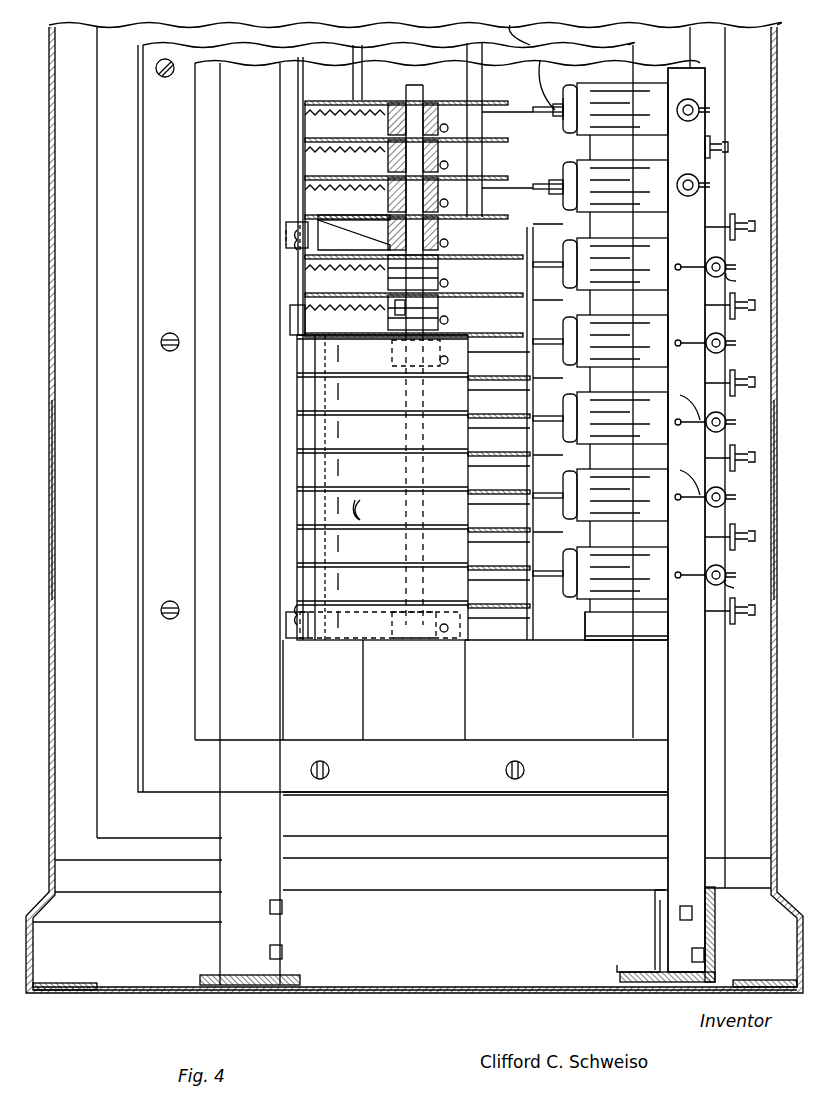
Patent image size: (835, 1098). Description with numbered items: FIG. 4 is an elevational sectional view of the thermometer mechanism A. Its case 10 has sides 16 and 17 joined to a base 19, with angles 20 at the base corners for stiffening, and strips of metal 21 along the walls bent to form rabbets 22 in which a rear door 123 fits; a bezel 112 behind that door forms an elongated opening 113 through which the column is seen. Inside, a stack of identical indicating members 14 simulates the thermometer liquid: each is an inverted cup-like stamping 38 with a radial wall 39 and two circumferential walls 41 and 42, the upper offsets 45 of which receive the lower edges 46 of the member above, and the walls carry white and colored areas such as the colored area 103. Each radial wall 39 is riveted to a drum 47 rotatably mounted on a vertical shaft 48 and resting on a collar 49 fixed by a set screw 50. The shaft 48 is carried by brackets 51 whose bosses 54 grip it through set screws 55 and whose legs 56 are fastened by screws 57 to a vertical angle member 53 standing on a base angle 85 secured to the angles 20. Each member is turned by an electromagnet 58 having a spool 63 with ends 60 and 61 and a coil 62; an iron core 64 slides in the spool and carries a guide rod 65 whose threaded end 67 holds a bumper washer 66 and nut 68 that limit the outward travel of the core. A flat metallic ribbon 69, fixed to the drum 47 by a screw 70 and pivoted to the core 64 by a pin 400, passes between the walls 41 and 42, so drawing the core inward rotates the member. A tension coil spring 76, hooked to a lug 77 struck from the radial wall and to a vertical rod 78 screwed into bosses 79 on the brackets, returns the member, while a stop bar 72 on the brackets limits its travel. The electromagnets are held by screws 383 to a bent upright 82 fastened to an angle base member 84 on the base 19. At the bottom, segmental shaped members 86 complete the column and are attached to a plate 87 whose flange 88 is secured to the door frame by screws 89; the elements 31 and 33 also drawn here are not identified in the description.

The case 10 is at (53, 355).
The indicating member 14 is at (297, 500).
The side 16 is at (94, 600).
The side 17 is at (772, 700).
The base 19 is at (139, 998).
The angle 20 is at (60, 985).
The strip of metal 21 is at (70, 438).
The rabbet 22 is at (110, 227).
The panel 31 is at (158, 445).
The screw 33 is at (170, 333).
The inverted cup-like stamping 38 is at (330, 102).
The radial wall 39 is at (363, 102).
The circumferential wall 41 is at (520, 417).
The circumferential wall 42 is at (297, 395).
The offset 45 is at (520, 530).
The lower edge 46 is at (370, 460).
The drum 47 is at (445, 103).
The shaft 48 is at (414, 85).
The collar 49 is at (388, 125).
The set screw 50 is at (450, 128).
The bracket 51 is at (330, 240).
The angle member 53 is at (282, 702).
The boss 54 is at (440, 240).
The set screw 55 is at (450, 243).
The leg 56 is at (286, 233).
The bolt or screw 57 is at (293, 233).
The electromagnet 58 is at (580, 85).
The spool end 60 is at (565, 84).
The spool end 61 is at (665, 95).
The coil 62 is at (612, 98).
The spool 63 is at (558, 102).
The iron core 64 is at (558, 178).
The guide rod 65 is at (712, 225).
The bumper washer 66 is at (736, 275).
The threaded end 67 is at (715, 145).
The nut 68 is at (700, 180).
The flat metallic ribbon 69 is at (518, 110).
The screw 70 is at (440, 272).
The stop bar 72 is at (290, 330).
The tension coil spring 76 is at (305, 150).
The lug 77 is at (388, 103).
The rod 78 is at (303, 82).
The boss 79 is at (330, 222).
The upright 82 is at (690, 792).
The angle base member 84 is at (645, 985).
The base angle 85 is at (302, 938).
The segmental shaped member 86 is at (467, 691).
The plate 87 is at (343, 740).
The flange 88 is at (466, 770).
The screw 89 is at (325, 780).
The colored area 103 is at (430, 425).
The bezel 112 is at (588, 720).
The elongated opening 113 is at (495, 45).
The door 123 is at (195, 497).
The screw 383 is at (691, 433).
The pin 400 is at (540, 60).
The mechanism A is at (405, 995).